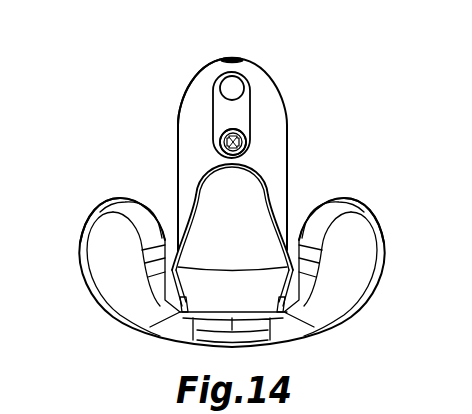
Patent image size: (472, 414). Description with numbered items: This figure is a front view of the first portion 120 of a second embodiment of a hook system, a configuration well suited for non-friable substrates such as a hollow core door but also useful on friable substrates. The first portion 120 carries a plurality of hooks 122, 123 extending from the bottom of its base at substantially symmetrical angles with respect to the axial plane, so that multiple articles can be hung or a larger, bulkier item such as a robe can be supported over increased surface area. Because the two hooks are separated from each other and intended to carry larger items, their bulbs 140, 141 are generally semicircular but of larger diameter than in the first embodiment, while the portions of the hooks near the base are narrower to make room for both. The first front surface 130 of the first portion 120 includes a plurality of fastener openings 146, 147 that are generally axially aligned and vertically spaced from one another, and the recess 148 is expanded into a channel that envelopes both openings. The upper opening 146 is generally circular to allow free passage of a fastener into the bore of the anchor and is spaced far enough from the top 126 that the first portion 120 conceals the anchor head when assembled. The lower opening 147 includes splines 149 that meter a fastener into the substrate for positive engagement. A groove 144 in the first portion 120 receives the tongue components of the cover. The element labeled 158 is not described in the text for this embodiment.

The first portion 120 is at (98, 82).
The hook 122 is at (123, 278).
The hook 123 is at (341, 278).
The top 126 is at (235, 57).
The first front surface 130 is at (282, 167).
The bulb 140 is at (112, 200).
The bulb 141 is at (355, 200).
The groove 144 is at (199, 187).
The upper opening 146 is at (224, 96).
The lower opening 147 is at (246, 138).
The recess 148 is at (244, 112).
The splines 149 is at (220, 143).
The housing cover 158 is at (193, 90).